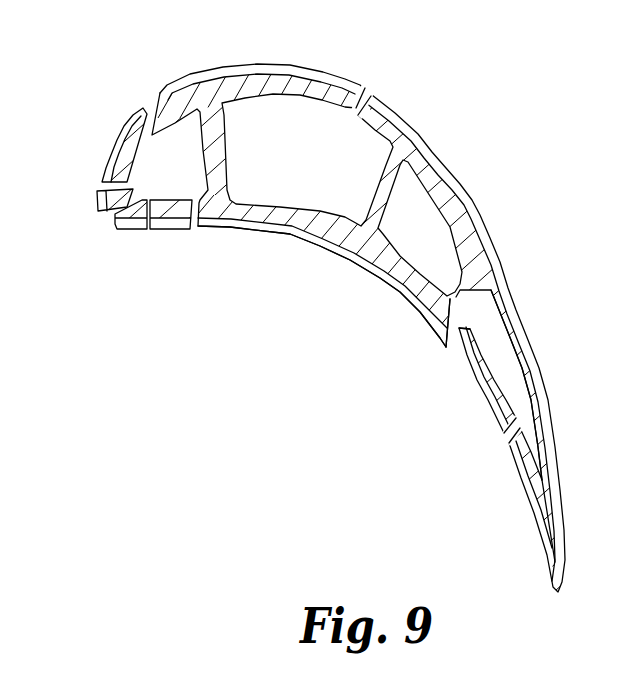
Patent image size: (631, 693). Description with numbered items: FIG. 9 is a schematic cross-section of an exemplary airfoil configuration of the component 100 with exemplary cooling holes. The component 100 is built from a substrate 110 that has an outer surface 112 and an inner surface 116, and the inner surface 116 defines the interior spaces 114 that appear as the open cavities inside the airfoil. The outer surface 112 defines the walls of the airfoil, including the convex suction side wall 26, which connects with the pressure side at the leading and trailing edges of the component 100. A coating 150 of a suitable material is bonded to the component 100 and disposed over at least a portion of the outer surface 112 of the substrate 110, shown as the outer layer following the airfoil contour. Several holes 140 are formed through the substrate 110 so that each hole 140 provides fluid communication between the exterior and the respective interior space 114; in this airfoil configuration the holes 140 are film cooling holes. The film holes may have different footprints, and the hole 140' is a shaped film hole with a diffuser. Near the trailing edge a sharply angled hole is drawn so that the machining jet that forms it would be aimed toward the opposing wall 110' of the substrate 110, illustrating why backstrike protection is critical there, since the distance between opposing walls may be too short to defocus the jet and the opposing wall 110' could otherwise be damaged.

The component 100 is at (580, 69).
The substrate 110 is at (460, 323).
The opposing wall 110' is at (349, 220).
The outer surface 112 is at (508, 373).
The interior space 114 is at (492, 340).
The inner surface 116 is at (445, 207).
The hole 140 is at (271, 256).
The shaped cooling hole 140' is at (104, 122).
The coating 150 is at (222, 72).
The suction side wall 26 is at (385, 280).